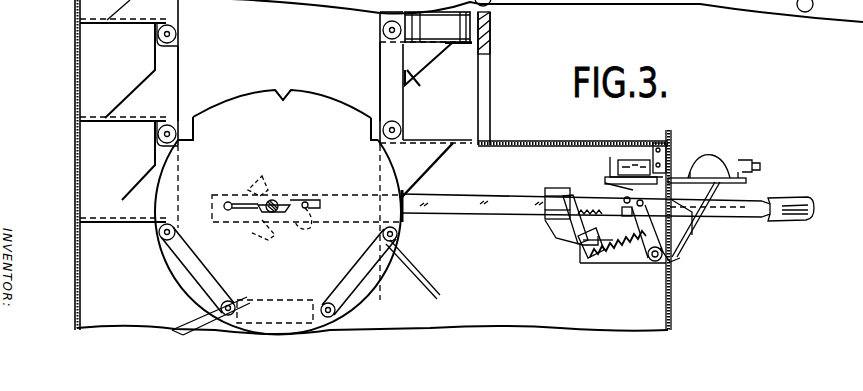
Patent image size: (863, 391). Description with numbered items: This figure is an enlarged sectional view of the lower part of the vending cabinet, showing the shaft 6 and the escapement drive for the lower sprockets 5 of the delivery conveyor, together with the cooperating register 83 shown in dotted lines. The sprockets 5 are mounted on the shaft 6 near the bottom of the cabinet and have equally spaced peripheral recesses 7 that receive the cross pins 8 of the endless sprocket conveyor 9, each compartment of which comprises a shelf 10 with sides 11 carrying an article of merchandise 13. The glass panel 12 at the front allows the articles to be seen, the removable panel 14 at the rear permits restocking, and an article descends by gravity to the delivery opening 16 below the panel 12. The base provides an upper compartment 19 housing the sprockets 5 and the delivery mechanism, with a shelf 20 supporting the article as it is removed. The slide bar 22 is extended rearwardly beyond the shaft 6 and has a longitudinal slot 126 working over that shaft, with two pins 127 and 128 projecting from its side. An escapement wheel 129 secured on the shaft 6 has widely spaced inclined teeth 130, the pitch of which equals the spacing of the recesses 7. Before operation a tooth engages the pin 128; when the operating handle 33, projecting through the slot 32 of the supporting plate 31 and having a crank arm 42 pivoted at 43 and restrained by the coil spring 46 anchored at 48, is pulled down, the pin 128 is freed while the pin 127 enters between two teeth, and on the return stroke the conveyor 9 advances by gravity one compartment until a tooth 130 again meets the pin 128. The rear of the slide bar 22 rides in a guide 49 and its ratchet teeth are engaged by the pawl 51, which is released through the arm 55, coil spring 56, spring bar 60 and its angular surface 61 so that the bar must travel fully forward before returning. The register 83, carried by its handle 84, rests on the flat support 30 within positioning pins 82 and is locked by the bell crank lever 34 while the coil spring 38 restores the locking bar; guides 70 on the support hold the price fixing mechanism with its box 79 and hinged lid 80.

The sprockets 5 is at (320, 113).
The shaft 6 is at (270, 215).
The peripheral recesses 7 is at (281, 90).
The cross pins 8 is at (180, 36).
The endless sprocket conveyor 9 is at (178, 68).
The shelf 10 is at (97, 25).
The sides 11 is at (140, 100).
The glass panel 12 is at (491, 22).
The articles of merchandise 13 is at (436, 40).
The removable panel 14 is at (77, 96).
The delivery opening 16 is at (483, 92).
The upper compartment 19 is at (630, 318).
The shelf 20 is at (536, 143).
The slide bar 22 is at (455, 210).
The flat support 30 is at (741, 185).
The supporting plate 31 is at (680, 245).
The slot 32 is at (697, 225).
The operating handle 33 is at (808, 214).
The bell crank lever 34 is at (703, 208).
The coil spring 38 is at (622, 192).
The crank arm 42 is at (640, 257).
The pivot 43 is at (672, 262).
The coil spring 46 is at (618, 260).
The spring connection 48 is at (590, 265).
The guide 49 is at (545, 192).
The pawl 51 is at (588, 216).
The arm 55 is at (570, 200).
The coil spring 56 is at (585, 233).
The spring bar 60 is at (600, 250).
The angular engaging surface 61 is at (582, 242).
The guides 70 is at (608, 168).
The box-like compartment 79 is at (630, 160).
The hinged lid 80 is at (655, 150).
The positioning pins 82 is at (812, 13).
The register 83 is at (738, 158).
The handle 84 is at (762, 165).
The longitudinal slot 126 is at (268, 196).
The pin 127 is at (230, 201).
The pin 128 is at (312, 218).
The escapement wheel 129 is at (295, 194).
The inclined teeth 130 is at (262, 175).